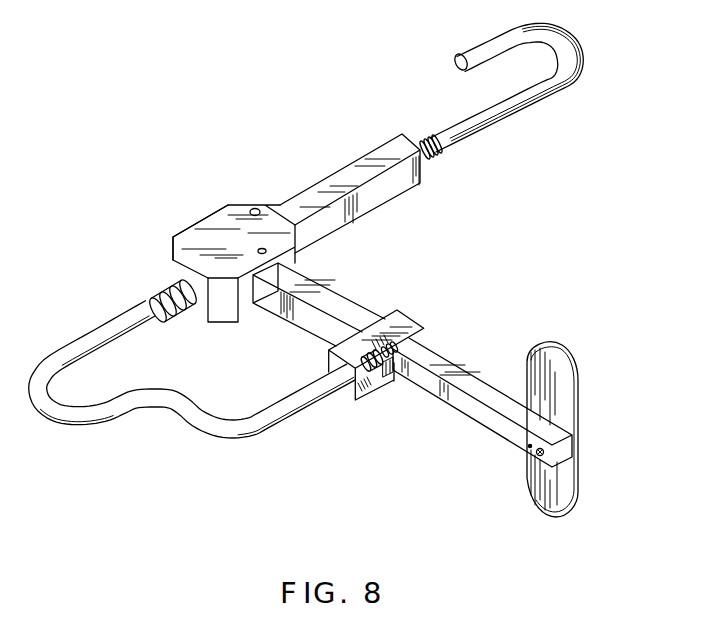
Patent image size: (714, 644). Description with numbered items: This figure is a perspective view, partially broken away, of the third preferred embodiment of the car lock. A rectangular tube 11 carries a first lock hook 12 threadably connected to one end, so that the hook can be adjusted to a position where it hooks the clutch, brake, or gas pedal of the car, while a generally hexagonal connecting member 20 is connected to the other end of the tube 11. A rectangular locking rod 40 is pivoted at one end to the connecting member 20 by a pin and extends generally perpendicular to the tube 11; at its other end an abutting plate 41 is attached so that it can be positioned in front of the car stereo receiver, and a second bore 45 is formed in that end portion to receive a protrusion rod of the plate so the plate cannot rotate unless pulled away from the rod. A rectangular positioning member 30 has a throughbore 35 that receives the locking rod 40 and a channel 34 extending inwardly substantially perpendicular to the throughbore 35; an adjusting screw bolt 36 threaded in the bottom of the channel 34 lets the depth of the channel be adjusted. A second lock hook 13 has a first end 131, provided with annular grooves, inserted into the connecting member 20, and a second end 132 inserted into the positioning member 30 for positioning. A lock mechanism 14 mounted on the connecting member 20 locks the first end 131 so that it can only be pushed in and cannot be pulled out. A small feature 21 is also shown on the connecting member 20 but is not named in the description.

The rectangular tube 11 is at (338, 186).
The first lock hook 12 is at (472, 50).
The second lock hook 13 is at (228, 436).
The lock mechanism 14 is at (193, 220).
The connecting member 20 is at (242, 203).
The hole 21 is at (268, 252).
The positioning member 30 is at (397, 382).
The channel 34 is at (388, 380).
The throughbore 35 is at (430, 342).
The adjusting screw bolt 36 is at (362, 373).
The locking rod 40 is at (509, 321).
The abutting plate 41 is at (548, 515).
The second bore 45 is at (528, 448).
The first end 131 is at (150, 292).
The second end 132 is at (355, 383).